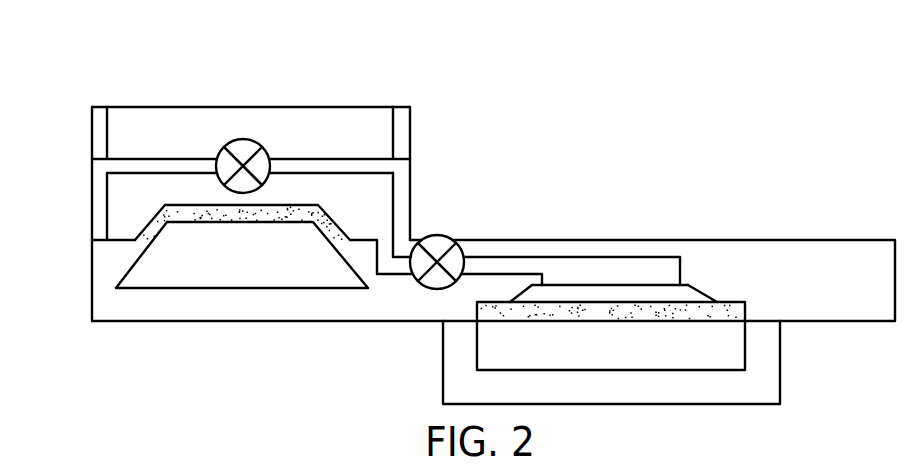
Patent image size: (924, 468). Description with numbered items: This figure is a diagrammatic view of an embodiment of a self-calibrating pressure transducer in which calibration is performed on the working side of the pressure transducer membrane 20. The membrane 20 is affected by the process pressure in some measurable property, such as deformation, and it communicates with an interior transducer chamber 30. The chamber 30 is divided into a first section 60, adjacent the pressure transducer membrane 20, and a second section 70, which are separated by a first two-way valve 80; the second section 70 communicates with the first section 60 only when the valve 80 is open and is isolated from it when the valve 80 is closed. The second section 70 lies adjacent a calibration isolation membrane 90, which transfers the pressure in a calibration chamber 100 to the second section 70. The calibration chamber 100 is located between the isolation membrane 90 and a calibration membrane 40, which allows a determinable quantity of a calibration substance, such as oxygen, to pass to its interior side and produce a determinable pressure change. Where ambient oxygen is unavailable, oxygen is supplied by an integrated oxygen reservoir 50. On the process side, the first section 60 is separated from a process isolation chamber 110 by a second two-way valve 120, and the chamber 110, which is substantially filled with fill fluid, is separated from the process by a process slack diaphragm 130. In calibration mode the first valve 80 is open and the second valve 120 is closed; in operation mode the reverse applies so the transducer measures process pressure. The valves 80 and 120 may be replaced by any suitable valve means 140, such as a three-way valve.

The pressure transducer membrane 20 is at (190, 223).
The interior transducer chamber 30 is at (123, 198).
The calibration membrane 40 is at (725, 319).
The oxygen reservoir 50 is at (563, 360).
The first section 60 is at (380, 186).
The second section 70 is at (660, 263).
The first two-way valve 80 is at (440, 247).
The calibration isolation membrane 90 is at (638, 283).
The calibration chamber 100 is at (687, 296).
The process isolation chamber 110 is at (273, 120).
The second two-way valve 120 is at (242, 148).
The process slack diaphragm 130 is at (133, 106).
The valve means 140 is at (222, 146).